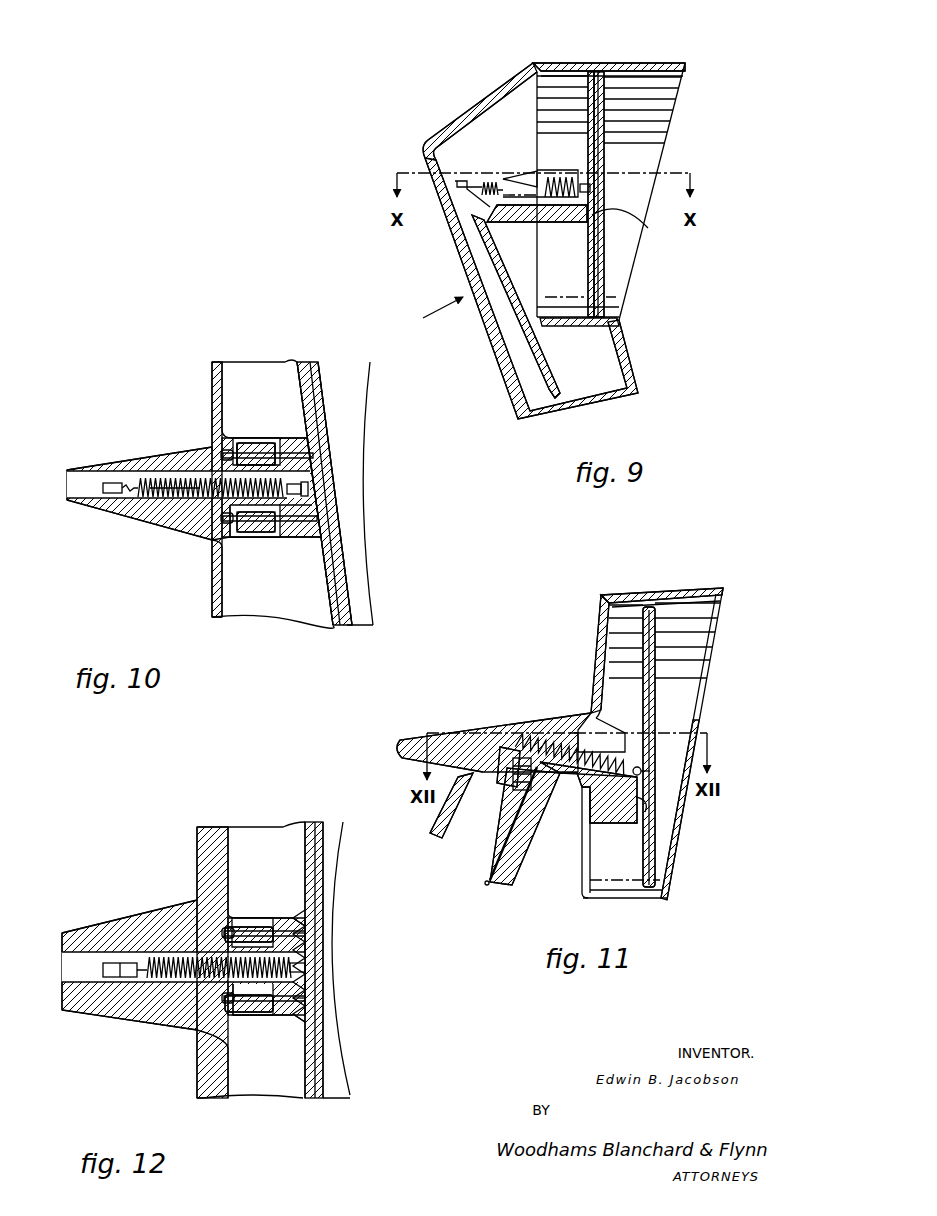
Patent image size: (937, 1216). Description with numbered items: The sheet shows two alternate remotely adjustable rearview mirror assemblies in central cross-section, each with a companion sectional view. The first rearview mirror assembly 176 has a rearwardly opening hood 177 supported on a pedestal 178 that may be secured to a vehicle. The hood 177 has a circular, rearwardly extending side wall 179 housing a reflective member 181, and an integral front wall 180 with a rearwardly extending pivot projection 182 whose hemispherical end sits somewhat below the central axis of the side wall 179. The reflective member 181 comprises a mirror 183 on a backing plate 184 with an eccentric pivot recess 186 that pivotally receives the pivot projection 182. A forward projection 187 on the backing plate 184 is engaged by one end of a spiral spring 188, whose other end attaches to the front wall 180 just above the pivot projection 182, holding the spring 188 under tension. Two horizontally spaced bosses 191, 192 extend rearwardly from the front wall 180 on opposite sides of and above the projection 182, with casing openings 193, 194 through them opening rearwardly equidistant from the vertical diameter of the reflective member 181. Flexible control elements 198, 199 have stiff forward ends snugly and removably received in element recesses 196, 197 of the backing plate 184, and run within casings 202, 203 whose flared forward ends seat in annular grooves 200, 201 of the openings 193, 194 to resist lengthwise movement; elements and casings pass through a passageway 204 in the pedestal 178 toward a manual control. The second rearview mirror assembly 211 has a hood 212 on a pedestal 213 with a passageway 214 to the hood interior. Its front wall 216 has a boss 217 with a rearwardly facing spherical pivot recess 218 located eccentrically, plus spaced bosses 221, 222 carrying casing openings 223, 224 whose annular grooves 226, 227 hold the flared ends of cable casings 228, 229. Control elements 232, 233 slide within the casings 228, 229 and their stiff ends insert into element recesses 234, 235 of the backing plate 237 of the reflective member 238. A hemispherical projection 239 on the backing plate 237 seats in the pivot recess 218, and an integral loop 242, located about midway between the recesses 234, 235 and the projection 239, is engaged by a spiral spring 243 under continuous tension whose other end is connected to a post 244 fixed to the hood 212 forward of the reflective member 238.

In FIG. 9, the rearview mirror assembly 176 is at (424, 314).
In FIG. 9, the hood 177 is at (638, 58).
In FIG. 10, the hood 177 is at (212, 382).
In FIG. 9, the pedestal 178 is at (632, 389).
In FIG. 9, the side wall 179 is at (662, 63).
In FIG. 10, the side wall 179 is at (311, 625).
In FIG. 9, the front wall 180 is at (480, 101).
In FIG. 10, the front wall 180 is at (216, 567).
In FIG. 9, the reflective member 181 is at (606, 135).
In FIG. 10, the reflective member 181 is at (324, 411).
In FIG. 9, the pivot projection 182 is at (520, 213).
In FIG. 10, the pivot projection 182 is at (310, 465).
In FIG. 9, the mirror 183 is at (602, 262).
In FIG. 10, the mirror 183 is at (343, 568).
In FIG. 9, the backing plate 184 is at (588, 103).
In FIG. 10, the backing plate 184 is at (334, 572).
In FIG. 9, the pivot recess 186 is at (648, 228).
In FIG. 9, the forward projection 187 is at (584, 184).
In FIG. 10, the forward projection 187 is at (308, 488).
In FIG. 9, the spiral spring 188 is at (536, 179).
In FIG. 10, the spiral spring 188 is at (178, 478).
In FIG. 9, the boss 191 is at (557, 177).
In FIG. 10, the boss 191 is at (257, 432).
In FIG. 10, the boss 192 is at (255, 538).
In FIG. 10, the casing opening 193 is at (235, 443).
In FIG. 10, the casing opening 194 is at (230, 538).
In FIG. 10, the element recess 196 is at (272, 442).
In FIG. 10, the element recess 197 is at (320, 522).
In FIG. 9, the flexible control element 198 is at (557, 398).
In FIG. 10, the flexible control element 198 is at (231, 453).
In FIG. 10, the flexible control element 199 is at (227, 524).
In FIG. 10, the annular groove 200 is at (264, 443).
In FIG. 10, the annular groove 201 is at (268, 535).
In FIG. 9, the casing 202 is at (548, 378).
In FIG. 10, the casing 202 is at (222, 458).
In FIG. 10, the casing 203 is at (200, 513).
In FIG. 9, the passageway 204 is at (462, 229).
In FIG. 11, the rearview mirror assembly 211 is at (576, 653).
In FIG. 11, the hood 212 is at (653, 585).
In FIG. 12, the hood 212 is at (190, 857).
In FIG. 11, the pedestal 213 is at (448, 836).
In FIG. 11, the passageway 214 is at (453, 838).
In FIG. 11, the front wall 216 is at (594, 671).
In FIG. 12, the front wall 216 is at (203, 872).
In FIG. 11, the boss 217 is at (620, 827).
In FIG. 12, the boss 217 is at (310, 947).
In FIG. 11, the pivot recess 218 is at (625, 780).
In FIG. 11, the boss 221 is at (608, 732).
In FIG. 12, the boss 221 is at (257, 925).
In FIG. 12, the boss 222 is at (262, 1018).
In FIG. 12, the casing opening 223 is at (240, 928).
In FIG. 12, the casing opening 224 is at (240, 1016).
In FIG. 12, the annular groove 226 is at (272, 926).
In FIG. 12, the annular groove 227 is at (270, 1012).
In FIG. 11, the cable casing 228 is at (488, 883).
In FIG. 12, the cable casing 228 is at (222, 931).
In FIG. 12, the cable casing 229 is at (197, 1033).
In FIG. 11, the control element 232 is at (485, 886).
In FIG. 12, the control element 232 is at (328, 898).
In FIG. 12, the control element 233 is at (298, 1021).
In FIG. 12, the element recess 234 is at (318, 934).
In FIG. 12, the element recess 235 is at (312, 997).
In FIG. 11, the backing plate 237 is at (656, 703).
In FIG. 12, the backing plate 237 is at (310, 861).
In FIG. 11, the reflective member 238 is at (665, 703).
In FIG. 12, the reflective member 238 is at (329, 1072).
In FIG. 11, the pivot projection 239 is at (645, 803).
In FIG. 11, the loop 242 is at (642, 770).
In FIG. 12, the loop 242 is at (317, 968).
In FIG. 11, the spiral spring 243 is at (553, 747).
In FIG. 12, the spiral spring 243 is at (153, 960).
In FIG. 11, the post 244 is at (510, 747).
In FIG. 12, the post 244 is at (123, 979).